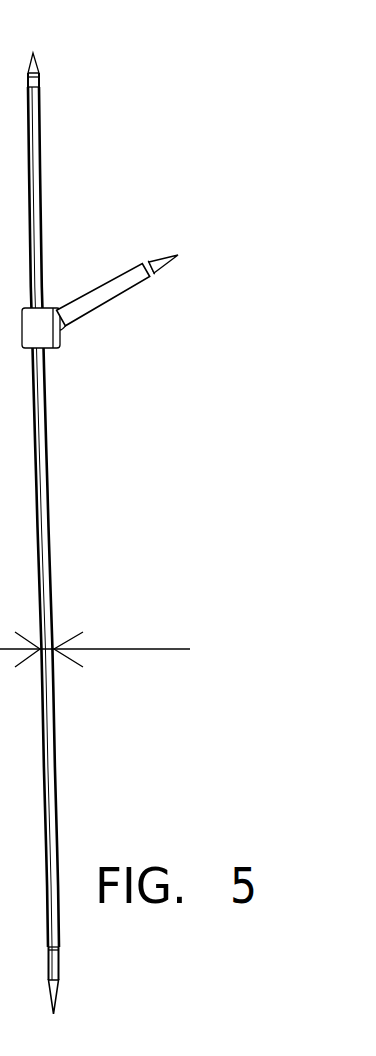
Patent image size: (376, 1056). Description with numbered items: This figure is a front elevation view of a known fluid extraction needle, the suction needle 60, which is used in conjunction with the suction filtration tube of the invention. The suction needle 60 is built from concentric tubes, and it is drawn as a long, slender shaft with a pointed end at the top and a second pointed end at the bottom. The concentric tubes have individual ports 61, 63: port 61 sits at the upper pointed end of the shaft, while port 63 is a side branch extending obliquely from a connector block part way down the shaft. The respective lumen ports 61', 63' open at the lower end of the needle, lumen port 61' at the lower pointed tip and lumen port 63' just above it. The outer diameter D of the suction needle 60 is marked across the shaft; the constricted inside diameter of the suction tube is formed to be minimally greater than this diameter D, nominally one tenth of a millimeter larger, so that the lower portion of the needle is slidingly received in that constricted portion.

The suction needle 60 is at (93, 435).
The port 61 is at (59, 43).
The port 63 is at (137, 256).
The diameter of suction needle D is at (100, 649).
The lumen port 63' is at (84, 964).
The lumen port 61' is at (84, 1007).